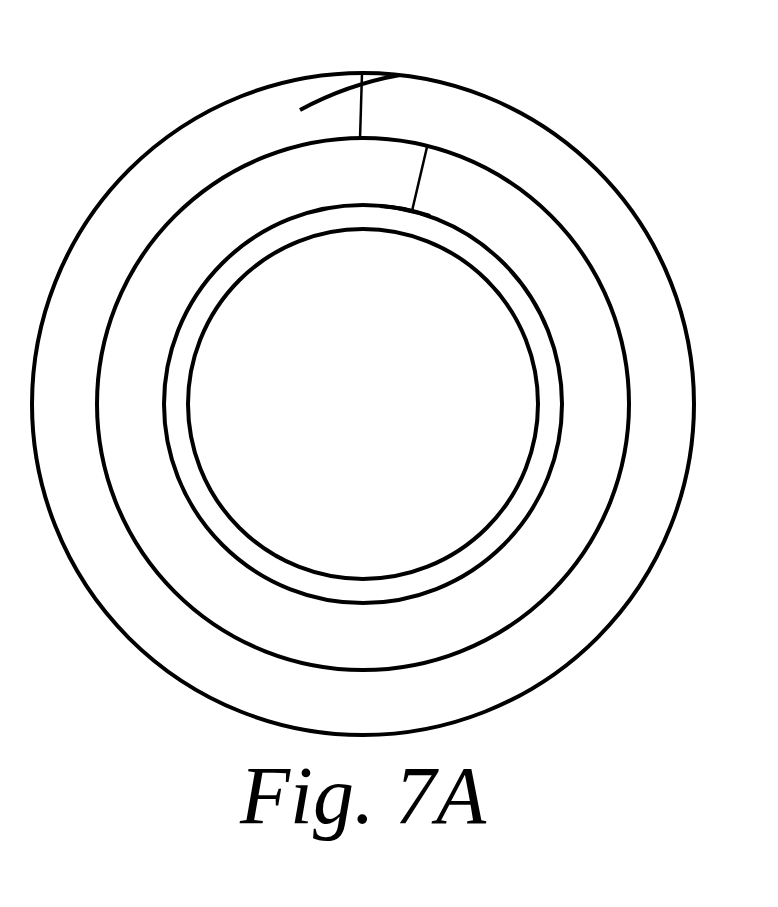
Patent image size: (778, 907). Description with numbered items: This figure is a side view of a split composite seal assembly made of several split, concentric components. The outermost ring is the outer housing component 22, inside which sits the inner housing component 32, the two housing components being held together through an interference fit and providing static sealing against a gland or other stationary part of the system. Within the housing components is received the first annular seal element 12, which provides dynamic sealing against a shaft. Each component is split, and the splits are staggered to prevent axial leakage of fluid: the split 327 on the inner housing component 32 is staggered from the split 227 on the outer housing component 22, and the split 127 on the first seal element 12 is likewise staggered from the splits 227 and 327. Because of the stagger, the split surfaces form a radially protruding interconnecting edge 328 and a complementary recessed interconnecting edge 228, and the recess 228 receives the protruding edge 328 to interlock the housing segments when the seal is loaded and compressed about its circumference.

The outer housing component 22 is at (603, 175).
The inner housing component 32 is at (549, 261).
The first annular seal element 12 is at (515, 297).
The split 127 is at (262, 235).
The split 227 is at (362, 72).
The recessed interconnecting edge 228 is at (430, 193).
The split 327 is at (407, 212).
The radially protruding interconnecting edge 328 is at (403, 173).